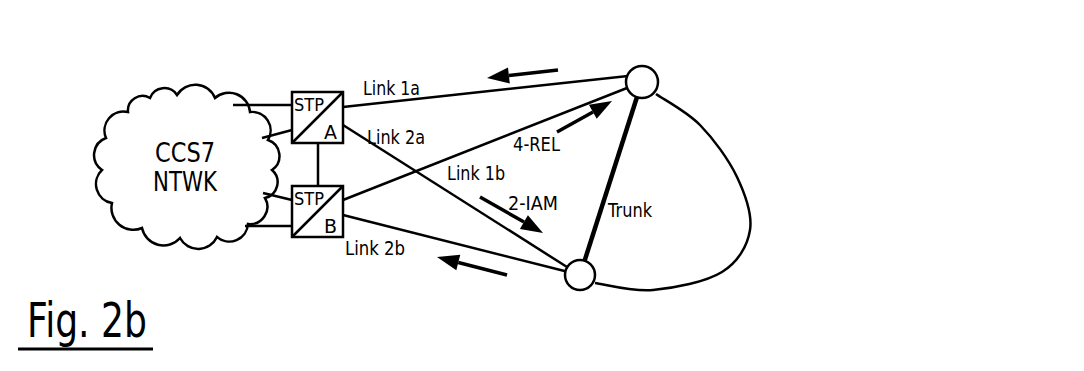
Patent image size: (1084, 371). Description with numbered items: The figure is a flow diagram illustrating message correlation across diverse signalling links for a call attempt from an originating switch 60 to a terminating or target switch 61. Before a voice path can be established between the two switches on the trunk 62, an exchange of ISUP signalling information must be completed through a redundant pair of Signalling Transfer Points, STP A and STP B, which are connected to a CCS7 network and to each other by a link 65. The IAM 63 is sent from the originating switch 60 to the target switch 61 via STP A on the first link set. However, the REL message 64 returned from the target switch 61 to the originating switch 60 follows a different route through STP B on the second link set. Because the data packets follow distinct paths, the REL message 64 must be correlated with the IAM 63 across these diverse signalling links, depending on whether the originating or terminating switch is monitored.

The originating switch 60 is at (658, 85).
The target switch 61 is at (590, 289).
The trunk 62 is at (615, 170).
The IAM 63 is at (497, 76).
The REL message 64 is at (453, 268).
The link between STP A and STP B 65 is at (320, 163).